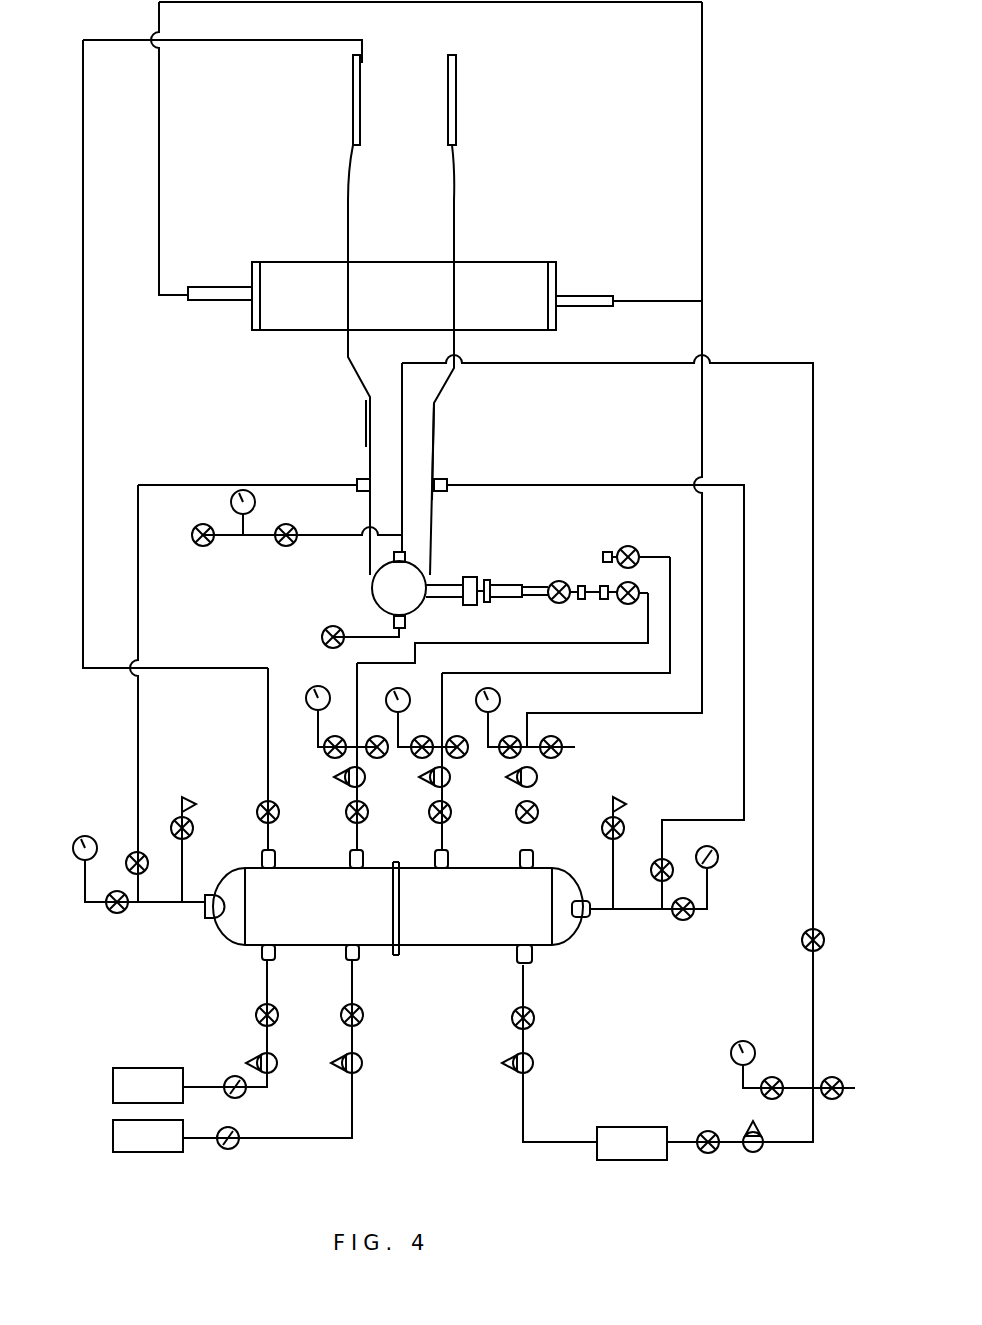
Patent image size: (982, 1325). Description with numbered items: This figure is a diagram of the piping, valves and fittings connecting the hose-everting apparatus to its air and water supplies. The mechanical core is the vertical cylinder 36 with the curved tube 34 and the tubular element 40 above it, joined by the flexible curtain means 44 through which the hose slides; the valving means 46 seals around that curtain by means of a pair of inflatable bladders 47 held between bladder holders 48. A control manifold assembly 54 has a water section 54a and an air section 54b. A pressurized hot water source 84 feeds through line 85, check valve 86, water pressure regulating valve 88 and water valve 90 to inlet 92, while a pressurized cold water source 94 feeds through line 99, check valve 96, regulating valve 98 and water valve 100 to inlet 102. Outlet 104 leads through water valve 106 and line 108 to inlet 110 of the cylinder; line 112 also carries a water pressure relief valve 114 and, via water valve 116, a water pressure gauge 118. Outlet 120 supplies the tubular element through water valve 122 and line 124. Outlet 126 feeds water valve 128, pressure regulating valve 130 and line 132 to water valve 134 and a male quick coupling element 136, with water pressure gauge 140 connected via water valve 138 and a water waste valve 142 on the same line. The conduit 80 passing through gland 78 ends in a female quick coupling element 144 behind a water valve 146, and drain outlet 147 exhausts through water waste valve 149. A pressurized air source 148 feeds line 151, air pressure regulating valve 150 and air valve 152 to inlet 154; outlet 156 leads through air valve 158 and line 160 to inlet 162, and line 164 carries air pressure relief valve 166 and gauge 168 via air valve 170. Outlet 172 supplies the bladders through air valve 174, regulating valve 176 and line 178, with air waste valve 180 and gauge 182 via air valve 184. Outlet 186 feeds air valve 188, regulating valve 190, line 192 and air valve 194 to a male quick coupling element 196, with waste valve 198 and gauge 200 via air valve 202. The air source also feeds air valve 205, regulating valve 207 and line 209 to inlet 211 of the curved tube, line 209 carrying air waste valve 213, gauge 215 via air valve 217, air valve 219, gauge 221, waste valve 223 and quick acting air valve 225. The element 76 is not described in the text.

The curved tube 34 is at (388, 588).
The vertical cylinder 36 is at (436, 434).
The tubular element 40 is at (457, 100).
The curtain means 44 is at (456, 210).
The valving means 46 is at (318, 255).
The flexible bladders 47 is at (486, 262).
The bladder holders 48 is at (256, 272).
The control manifold assembly 54 is at (470, 868).
The water section 54a is at (338, 904).
The air section 54b is at (481, 904).
The conduit 76 is at (440, 585).
The gland 78 is at (478, 578).
The conduit 80 is at (520, 588).
The pressurized hot water source 84 is at (158, 1152).
The line 85 is at (353, 1112).
The check valve 86 is at (228, 1150).
The water pressure regulating valve 88 is at (364, 1063).
The water valve 90 is at (365, 1015).
The inlet 92 is at (362, 962).
The pressurized cold water source 94 is at (138, 1068).
The check valve 96 is at (235, 1075).
The water pressure regulating valve 98 is at (275, 1055).
The line 99 is at (268, 985).
The water valve 100 is at (257, 1012).
The inlet 102 is at (260, 955).
The outlet 104 is at (212, 893).
The water valve 106 is at (130, 855).
The line 108 is at (140, 482).
The inlet 110 is at (362, 478).
The line 112 is at (160, 905).
The water pressure relief valve 114 is at (178, 818).
The water valve 116 is at (112, 915).
The water pressure gauge 118 is at (75, 858).
The outlet 120 is at (278, 860).
The water valve 122 is at (258, 800).
The line 124 is at (84, 372).
The outlet 126 is at (363, 860).
The water valve 128 is at (346, 812).
The pressure regulating valve 130 is at (345, 780).
The line 132 is at (545, 643).
The water valve 134 is at (620, 586).
The male quick coupling element 136 is at (632, 604).
The water valve 138 is at (325, 755).
The water pressure gauge 140 is at (316, 686).
The water waste valve 142 is at (374, 735).
The female quick coupling element 144 is at (604, 600).
The water valve 146 is at (552, 600).
The drain outlet 147 is at (405, 633).
The pressurized air source 148 is at (640, 1160).
The water waste valve 149 is at (323, 630).
The air pressure regulating valve 150 is at (536, 1063).
The line 151 is at (523, 1100).
The air valve 152 is at (535, 1018).
The inlet 154 is at (535, 957).
The outlet 156 is at (588, 900).
The air valve 158 is at (667, 858).
The line 160 is at (745, 775).
The inlet 162 is at (450, 482).
The line 164 is at (618, 912).
The air pressure relief valve 166 is at (622, 820).
The air pressure gauge 168 is at (720, 855).
The air valve 170 is at (690, 918).
The outlet 172 is at (535, 860).
The air valve 174 is at (540, 812).
The air pressure regulating valve 176 is at (540, 780).
The line 178 is at (702, 660).
The air waste valve 180 is at (563, 748).
The air pressure gauge 182 is at (500, 702).
The air valve 184 is at (520, 740).
The outlet 186 is at (447, 860).
The air valve 188 is at (430, 810).
The air pressure regulating valve 190 is at (430, 785).
The line 192 is at (668, 680).
The air valve 194 is at (634, 548).
The male quick coupling element 196 is at (606, 552).
The air waste valve 198 is at (460, 737).
The air pressure gauge 200 is at (408, 690).
The air valve 202 is at (432, 757).
The air valve 205 is at (710, 1128).
The air pressure regulating valve 207 is at (755, 1152).
The line 209 is at (813, 762).
The inlet 211 is at (403, 552).
The air waste valve 213 is at (835, 1077).
The air pressure gauge 215 is at (745, 1042).
The air valve 217 is at (772, 1075).
The air valve 219 is at (288, 523).
The air pressure gauge 221 is at (231, 505).
The air waste valve 223 is at (196, 545).
The quick acting air valve 225 is at (824, 940).